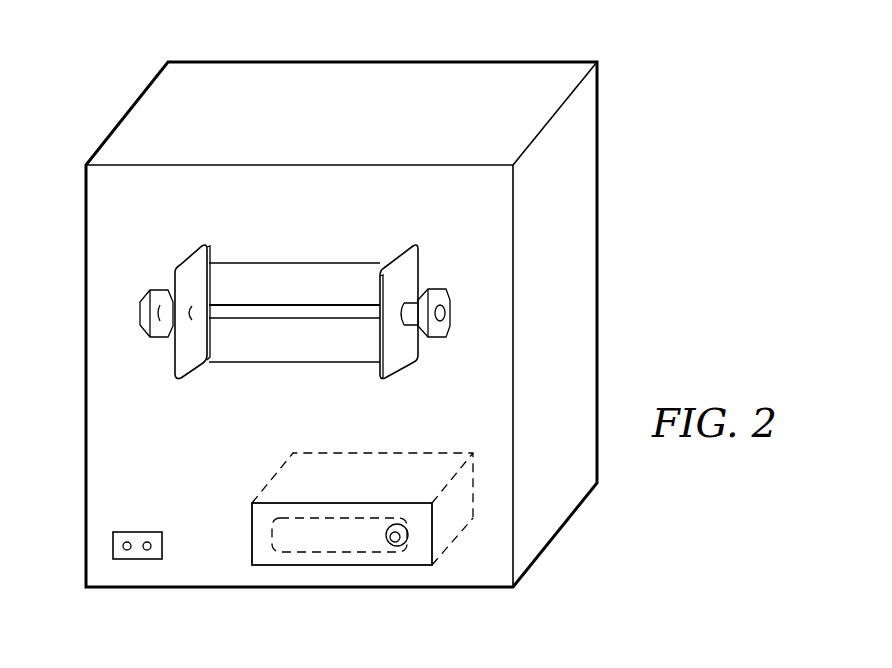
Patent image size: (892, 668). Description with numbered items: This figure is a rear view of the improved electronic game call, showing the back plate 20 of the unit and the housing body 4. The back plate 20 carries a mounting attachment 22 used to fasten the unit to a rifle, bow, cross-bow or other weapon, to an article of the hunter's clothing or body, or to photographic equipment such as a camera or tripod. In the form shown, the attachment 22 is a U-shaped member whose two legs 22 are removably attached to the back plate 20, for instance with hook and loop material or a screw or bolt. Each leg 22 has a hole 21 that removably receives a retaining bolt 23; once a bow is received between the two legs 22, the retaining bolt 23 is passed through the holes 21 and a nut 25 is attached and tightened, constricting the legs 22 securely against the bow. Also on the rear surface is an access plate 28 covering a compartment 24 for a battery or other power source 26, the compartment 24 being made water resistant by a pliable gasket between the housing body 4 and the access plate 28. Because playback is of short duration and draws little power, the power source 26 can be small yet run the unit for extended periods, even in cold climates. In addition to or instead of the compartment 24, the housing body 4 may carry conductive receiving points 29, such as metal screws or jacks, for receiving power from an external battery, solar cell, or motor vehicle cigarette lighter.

The housing body 4 is at (626, 96).
The back plate 20 is at (172, 458).
The hole 21 is at (190, 337).
The attachment 22 is at (190, 260).
The retaining bolt 23 is at (273, 303).
The compartment 24 is at (452, 510).
The nut 25 is at (446, 295).
The power source 26 is at (273, 552).
The access plate 28 is at (347, 567).
The conductive receiving points 29 is at (137, 560).